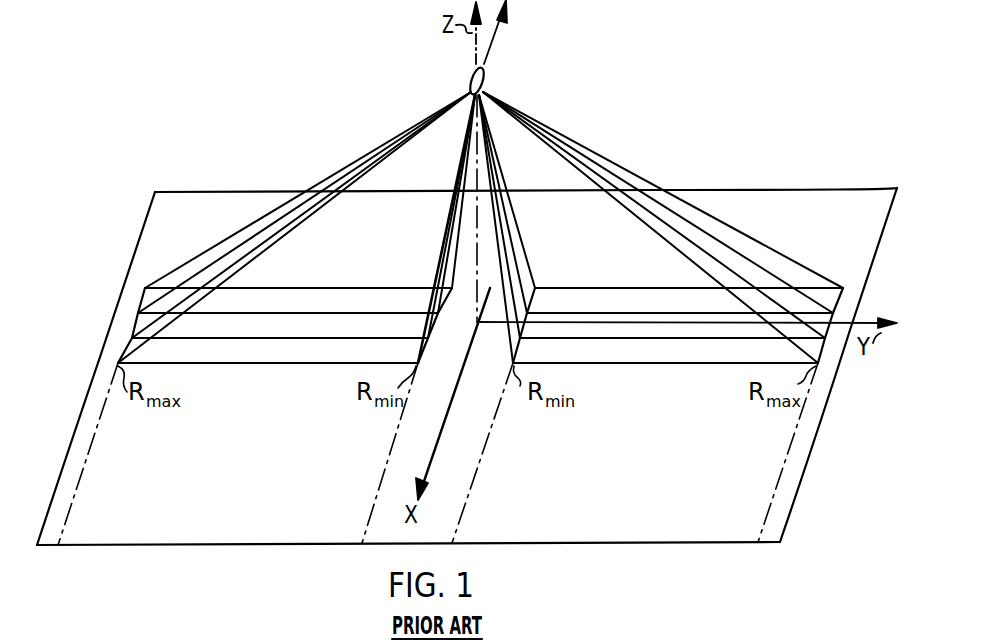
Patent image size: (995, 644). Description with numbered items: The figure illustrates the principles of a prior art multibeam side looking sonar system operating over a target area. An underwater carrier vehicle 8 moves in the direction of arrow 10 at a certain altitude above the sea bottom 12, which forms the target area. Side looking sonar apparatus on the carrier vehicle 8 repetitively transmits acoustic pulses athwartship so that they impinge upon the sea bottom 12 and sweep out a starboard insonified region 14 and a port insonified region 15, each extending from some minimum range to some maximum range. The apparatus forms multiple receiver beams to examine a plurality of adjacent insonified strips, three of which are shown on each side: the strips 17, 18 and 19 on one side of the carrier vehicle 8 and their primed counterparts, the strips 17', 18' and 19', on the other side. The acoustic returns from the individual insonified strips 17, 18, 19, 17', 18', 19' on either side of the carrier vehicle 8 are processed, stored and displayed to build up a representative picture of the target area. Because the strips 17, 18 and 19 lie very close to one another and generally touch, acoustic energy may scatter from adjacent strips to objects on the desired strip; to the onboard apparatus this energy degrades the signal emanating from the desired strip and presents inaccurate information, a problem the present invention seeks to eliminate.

The underwater carrier vehicle 8 is at (467, 82).
The arrow 10 is at (498, 28).
The sea bottom 12 is at (815, 200).
The starboard insonified region 14 is at (836, 362).
The port insonified region 15 is at (128, 323).
The insonified strip 17 is at (669, 367).
The insonified strip 18 is at (676, 297).
The insonified strip 19 is at (685, 285).
The insonified strip 17' is at (273, 369).
The insonified strip 18' is at (285, 354).
The insonified strip 19' is at (295, 282).